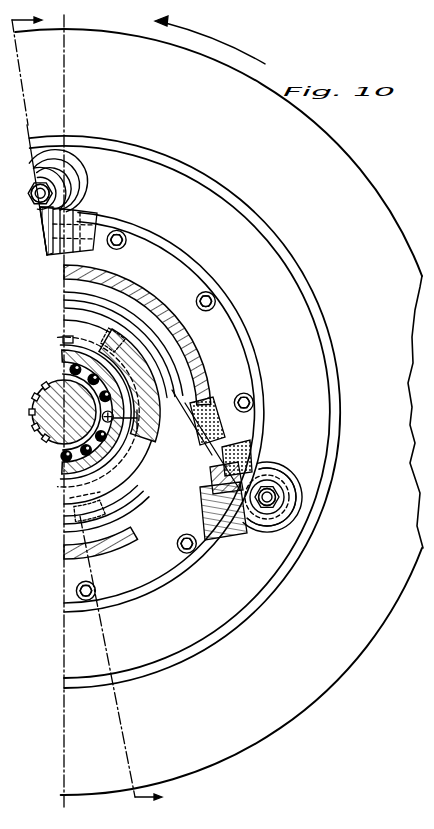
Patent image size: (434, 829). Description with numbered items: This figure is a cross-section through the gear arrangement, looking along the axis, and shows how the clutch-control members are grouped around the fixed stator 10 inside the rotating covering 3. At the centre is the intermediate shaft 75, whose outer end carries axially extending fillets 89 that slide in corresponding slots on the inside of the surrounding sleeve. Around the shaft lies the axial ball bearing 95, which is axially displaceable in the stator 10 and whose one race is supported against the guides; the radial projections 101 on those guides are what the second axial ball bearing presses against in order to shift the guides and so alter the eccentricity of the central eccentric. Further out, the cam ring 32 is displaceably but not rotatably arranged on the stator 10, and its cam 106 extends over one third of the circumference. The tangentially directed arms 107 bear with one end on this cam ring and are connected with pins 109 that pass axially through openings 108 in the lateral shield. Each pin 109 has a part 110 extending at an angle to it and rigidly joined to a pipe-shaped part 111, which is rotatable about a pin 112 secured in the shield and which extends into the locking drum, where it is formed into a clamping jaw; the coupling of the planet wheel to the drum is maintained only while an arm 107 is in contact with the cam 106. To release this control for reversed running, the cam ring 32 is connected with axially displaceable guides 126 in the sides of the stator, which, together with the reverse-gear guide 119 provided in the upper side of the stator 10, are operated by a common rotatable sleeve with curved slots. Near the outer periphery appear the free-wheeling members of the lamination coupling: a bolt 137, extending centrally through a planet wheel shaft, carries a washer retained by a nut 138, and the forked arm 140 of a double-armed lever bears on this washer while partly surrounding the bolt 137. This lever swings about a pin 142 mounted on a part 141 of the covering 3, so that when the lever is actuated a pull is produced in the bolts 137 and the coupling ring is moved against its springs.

The covering 3 is at (343, 144).
The stator 10 is at (100, 475).
The cam ring 32 is at (122, 460).
The intermediate shaft 75 is at (53, 432).
The fillets 89 is at (53, 387).
The axial ball bearing 95 is at (67, 457).
The radial projections 101 is at (128, 347).
The cam 106 is at (100, 495).
The tangentially directed arms 107 is at (112, 342).
The openings 108 is at (213, 406).
The pins 109 is at (196, 462).
The part 110 is at (218, 431).
The pipe-shaped part 111 is at (233, 446).
The pin 112 is at (248, 468).
The guide 119 is at (68, 338).
The guides 126 is at (137, 431).
The bolts 137 is at (58, 178).
The nut 138 is at (70, 182).
The forked arm 140 is at (72, 197).
The part of the covering 141 is at (133, 277).
The pin 142 is at (105, 222).